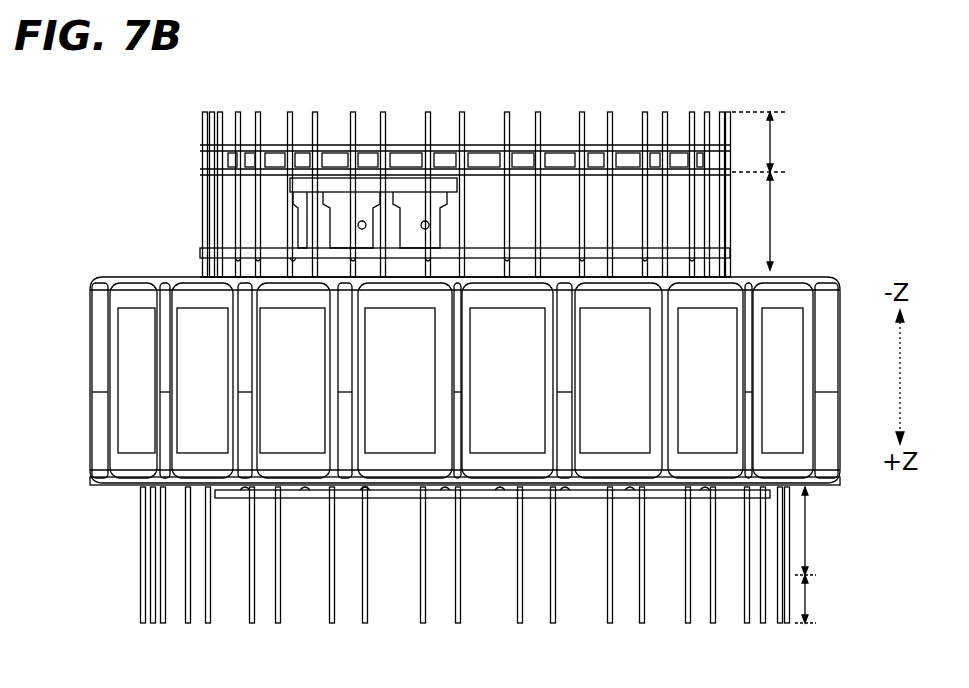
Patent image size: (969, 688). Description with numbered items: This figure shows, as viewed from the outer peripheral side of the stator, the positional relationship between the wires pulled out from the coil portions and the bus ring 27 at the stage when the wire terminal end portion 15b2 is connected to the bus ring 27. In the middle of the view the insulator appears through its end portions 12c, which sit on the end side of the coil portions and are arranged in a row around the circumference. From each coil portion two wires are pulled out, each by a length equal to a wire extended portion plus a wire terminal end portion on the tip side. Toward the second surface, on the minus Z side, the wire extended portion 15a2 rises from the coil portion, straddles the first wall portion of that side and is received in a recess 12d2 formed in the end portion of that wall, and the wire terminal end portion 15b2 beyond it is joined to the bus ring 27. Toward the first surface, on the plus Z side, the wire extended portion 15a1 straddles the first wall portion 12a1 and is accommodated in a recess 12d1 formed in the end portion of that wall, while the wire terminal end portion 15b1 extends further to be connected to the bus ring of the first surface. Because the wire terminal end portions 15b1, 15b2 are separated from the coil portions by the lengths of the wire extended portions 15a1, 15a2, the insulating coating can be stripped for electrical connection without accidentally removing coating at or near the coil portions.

The bus ring 27 is at (418, 160).
The recess 12d2 is at (577, 257).
The end portion 12c is at (133, 297).
The first wall portion 12a1 is at (397, 488).
The recess 12d1 is at (498, 498).
The wire terminal end portion 15b2 is at (772, 142).
The wire extended portion 15a2 is at (772, 222).
The wire extended portion 15a1 is at (808, 526).
The wire terminal end portion 15b1 is at (808, 598).